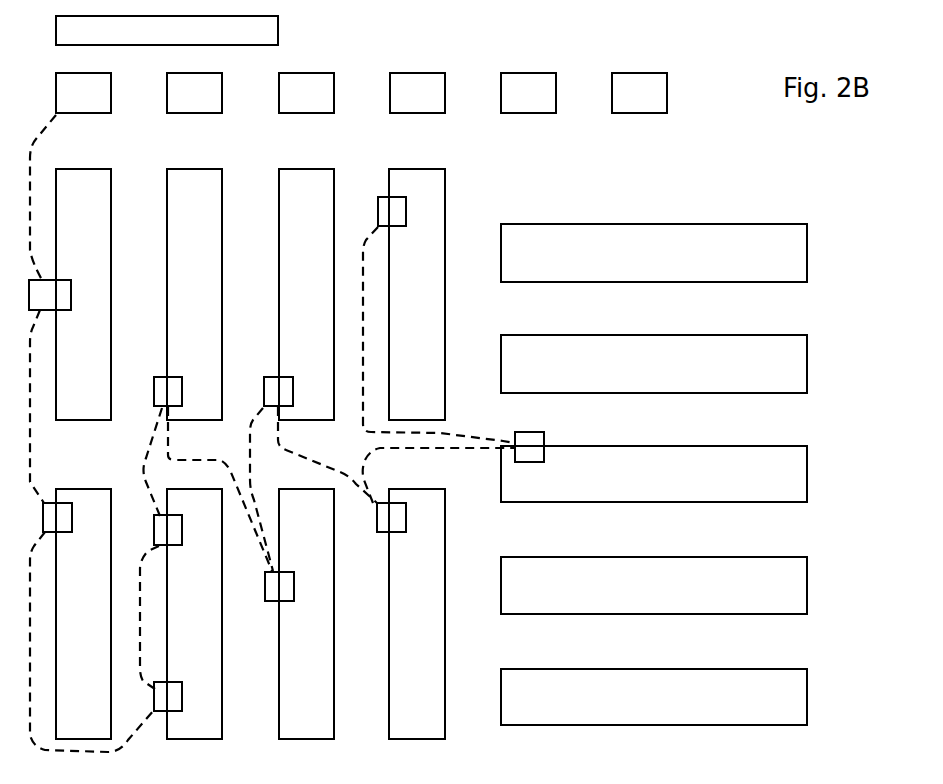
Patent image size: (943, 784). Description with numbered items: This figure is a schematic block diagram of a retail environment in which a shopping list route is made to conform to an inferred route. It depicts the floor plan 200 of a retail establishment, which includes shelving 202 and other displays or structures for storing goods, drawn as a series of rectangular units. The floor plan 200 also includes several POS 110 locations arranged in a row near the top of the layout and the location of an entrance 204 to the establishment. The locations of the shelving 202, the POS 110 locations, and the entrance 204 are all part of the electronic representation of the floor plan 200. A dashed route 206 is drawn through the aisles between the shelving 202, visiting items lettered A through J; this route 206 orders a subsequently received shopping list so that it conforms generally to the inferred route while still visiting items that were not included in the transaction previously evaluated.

The floor plan 200 is at (733, 149).
The entrance 204 is at (222, 40).
The POS location 110 is at (96, 102).
The shelving 202 is at (446, 181).
The route 206 is at (447, 433).